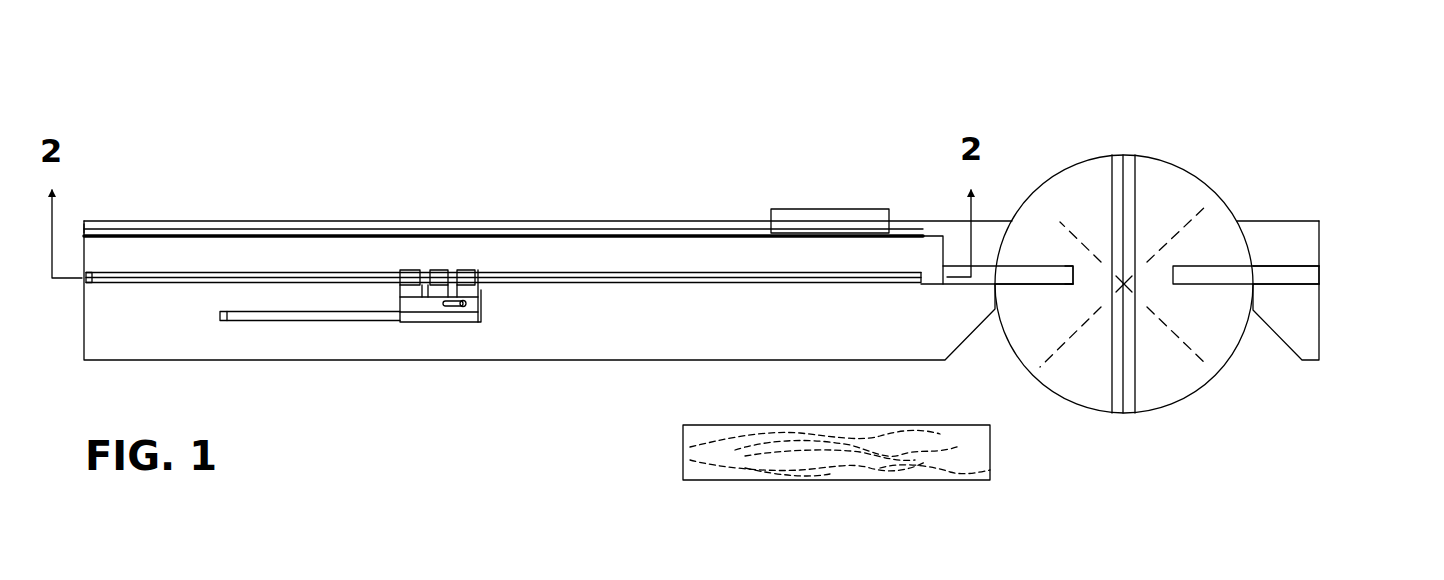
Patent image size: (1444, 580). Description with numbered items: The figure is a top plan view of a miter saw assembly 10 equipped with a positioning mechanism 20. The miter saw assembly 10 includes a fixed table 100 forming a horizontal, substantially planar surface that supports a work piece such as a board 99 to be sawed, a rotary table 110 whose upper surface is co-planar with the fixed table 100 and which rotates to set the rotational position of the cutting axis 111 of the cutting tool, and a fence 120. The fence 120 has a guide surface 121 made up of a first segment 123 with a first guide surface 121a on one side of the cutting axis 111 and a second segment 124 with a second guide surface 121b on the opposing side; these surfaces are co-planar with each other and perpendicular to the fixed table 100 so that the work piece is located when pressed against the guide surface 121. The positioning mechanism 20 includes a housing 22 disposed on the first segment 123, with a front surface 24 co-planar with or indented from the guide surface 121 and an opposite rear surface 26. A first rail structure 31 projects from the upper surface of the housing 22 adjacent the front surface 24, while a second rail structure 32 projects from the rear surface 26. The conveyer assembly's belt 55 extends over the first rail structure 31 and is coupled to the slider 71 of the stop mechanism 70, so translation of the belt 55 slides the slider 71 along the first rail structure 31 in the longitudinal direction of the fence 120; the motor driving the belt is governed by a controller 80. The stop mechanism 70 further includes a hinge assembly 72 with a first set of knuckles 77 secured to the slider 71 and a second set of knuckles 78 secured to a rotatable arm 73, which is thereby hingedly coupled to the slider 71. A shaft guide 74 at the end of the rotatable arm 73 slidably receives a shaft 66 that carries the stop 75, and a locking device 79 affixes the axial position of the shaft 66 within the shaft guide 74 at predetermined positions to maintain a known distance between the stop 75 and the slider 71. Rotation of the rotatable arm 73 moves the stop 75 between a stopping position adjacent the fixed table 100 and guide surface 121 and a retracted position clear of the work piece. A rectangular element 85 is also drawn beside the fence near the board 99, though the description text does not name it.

The miter saw assembly 10 is at (272, 101).
The positioning mechanism 20 is at (454, 359).
The housing 22 is at (184, 253).
The front surface 24 is at (730, 287).
The rear surface 26 is at (680, 230).
The first rail structure 31 is at (263, 271).
The second rail structure 32 is at (238, 221).
The belt 55 is at (285, 271).
The shaft 66 is at (300, 321).
The stop mechanism 70 is at (454, 307).
The slider 71 is at (453, 270).
The hinge assembly 72 is at (393, 264).
The rotatable arm 73 is at (408, 305).
The shaft guide 74 is at (427, 322).
The stop 75 is at (488, 303).
The first set of knuckles 77 is at (405, 270).
The second set of knuckles 78 is at (428, 270).
The locking device 79 is at (463, 321).
The controller 80 is at (818, 209).
The workpiece 85 is at (836, 502).
The board 99 is at (836, 480).
The fixed table 100 is at (193, 337).
The rotary table 110 is at (1220, 355).
The cutting axis 111 is at (1125, 388).
The fence 120 is at (1017, 256).
The guide surface 121 is at (868, 285).
The first guide surface 121a is at (1013, 286).
The second guide surface 121b is at (1300, 286).
The first segment 123 is at (1052, 286).
The second segment 124 is at (1319, 274).